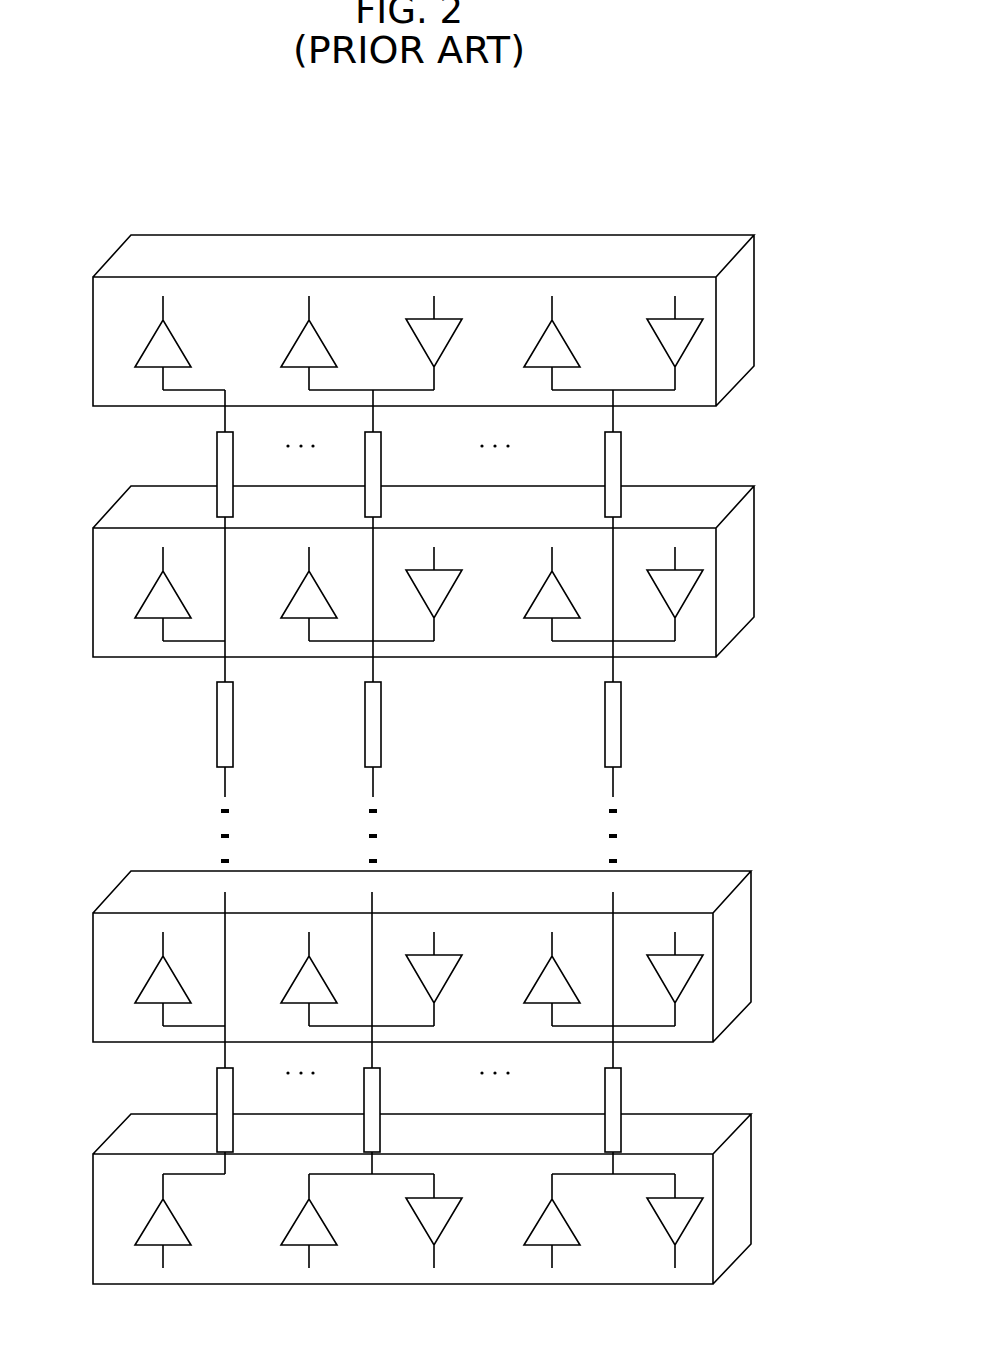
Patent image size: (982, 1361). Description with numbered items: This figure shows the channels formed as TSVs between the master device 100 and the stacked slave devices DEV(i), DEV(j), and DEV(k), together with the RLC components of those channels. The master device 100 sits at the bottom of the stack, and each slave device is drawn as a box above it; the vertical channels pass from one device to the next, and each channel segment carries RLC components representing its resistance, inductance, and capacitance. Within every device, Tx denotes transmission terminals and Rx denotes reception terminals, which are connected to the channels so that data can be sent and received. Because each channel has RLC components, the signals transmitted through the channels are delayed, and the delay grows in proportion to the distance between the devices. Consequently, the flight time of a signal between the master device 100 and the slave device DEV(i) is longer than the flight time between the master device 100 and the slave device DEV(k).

The master device 100 is at (752, 1178).
The RLC components RLC is at (440, 782).